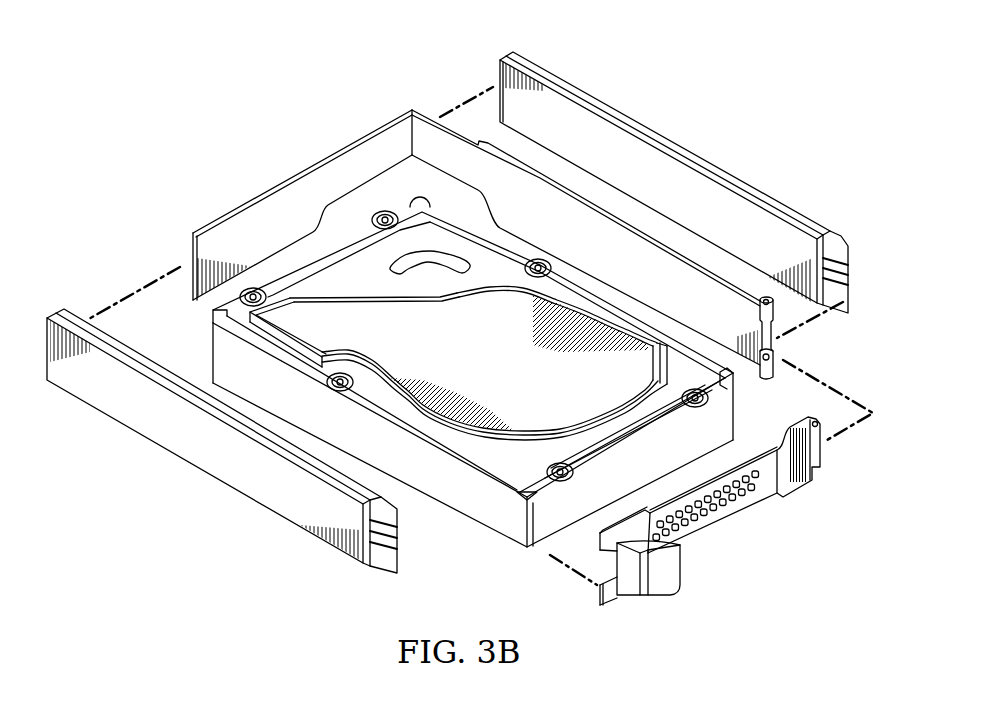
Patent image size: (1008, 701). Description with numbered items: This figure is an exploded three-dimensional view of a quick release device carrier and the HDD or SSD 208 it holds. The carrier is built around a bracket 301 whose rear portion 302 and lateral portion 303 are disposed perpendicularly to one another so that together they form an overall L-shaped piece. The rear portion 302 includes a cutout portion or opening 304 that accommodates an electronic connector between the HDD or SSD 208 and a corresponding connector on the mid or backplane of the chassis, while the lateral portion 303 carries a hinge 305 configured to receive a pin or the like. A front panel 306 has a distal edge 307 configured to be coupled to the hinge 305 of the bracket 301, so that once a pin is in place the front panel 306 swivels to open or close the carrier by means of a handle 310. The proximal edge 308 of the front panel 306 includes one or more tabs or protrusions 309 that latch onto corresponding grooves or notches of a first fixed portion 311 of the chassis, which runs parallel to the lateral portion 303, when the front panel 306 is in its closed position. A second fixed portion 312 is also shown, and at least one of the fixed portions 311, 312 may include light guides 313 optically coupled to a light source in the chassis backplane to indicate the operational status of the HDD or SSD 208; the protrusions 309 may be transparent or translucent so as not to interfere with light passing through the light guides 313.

The HDD or SSD 208 is at (213, 340).
The bracket 301 is at (408, 100).
The rear portion 302 is at (280, 185).
The lateral portion 303 is at (580, 197).
The cutout portion or opening 304 is at (406, 188).
The hinge 305 is at (800, 348).
The front panel 306 is at (743, 547).
The distal edge 307 is at (822, 447).
The proximal edge 308 is at (557, 592).
The tabs or protrusions 309 is at (600, 540).
The handle 310 is at (658, 588).
The first fixed portion 311 is at (217, 478).
The fixed portion 312 is at (690, 152).
The light guides 313 is at (383, 548).